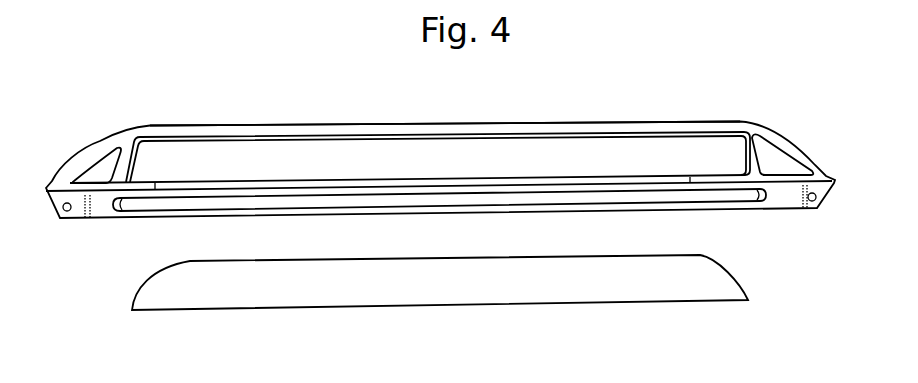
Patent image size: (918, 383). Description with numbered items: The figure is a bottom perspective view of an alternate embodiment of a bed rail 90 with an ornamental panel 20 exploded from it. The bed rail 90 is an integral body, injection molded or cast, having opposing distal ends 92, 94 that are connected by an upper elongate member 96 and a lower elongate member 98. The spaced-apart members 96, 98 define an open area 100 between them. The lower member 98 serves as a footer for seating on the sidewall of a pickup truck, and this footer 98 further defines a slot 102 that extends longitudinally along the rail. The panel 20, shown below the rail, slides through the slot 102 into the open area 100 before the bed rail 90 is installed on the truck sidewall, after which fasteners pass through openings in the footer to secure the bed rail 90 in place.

The panel 20 is at (427, 293).
The bed rail 90 is at (283, 128).
The distal end 92 is at (123, 134).
The distal end 94 is at (793, 142).
The upper elongate member 96 is at (371, 124).
The lower elongate member 98 is at (226, 183).
The open area 100 is at (565, 163).
The slot 102 is at (298, 201).